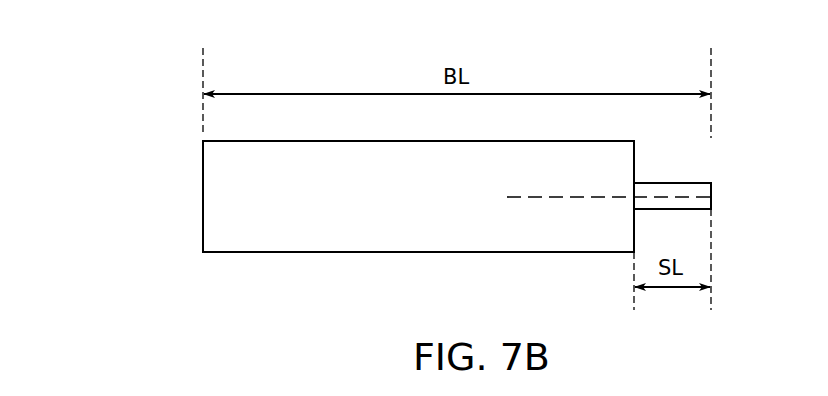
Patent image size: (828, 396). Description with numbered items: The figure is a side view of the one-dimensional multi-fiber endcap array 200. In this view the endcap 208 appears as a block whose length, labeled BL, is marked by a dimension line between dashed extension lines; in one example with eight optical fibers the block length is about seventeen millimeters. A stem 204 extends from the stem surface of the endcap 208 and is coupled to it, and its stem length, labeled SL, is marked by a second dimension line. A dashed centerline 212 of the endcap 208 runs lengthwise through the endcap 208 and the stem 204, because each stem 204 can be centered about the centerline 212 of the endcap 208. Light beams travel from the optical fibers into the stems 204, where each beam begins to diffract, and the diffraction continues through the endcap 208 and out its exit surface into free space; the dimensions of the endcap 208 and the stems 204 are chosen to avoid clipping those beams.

The 1D multi-fiber endcap array 200 is at (113, 63).
The endcap 208 is at (203, 197).
The stem 204 is at (698, 183).
The centerline 212 is at (584, 199).